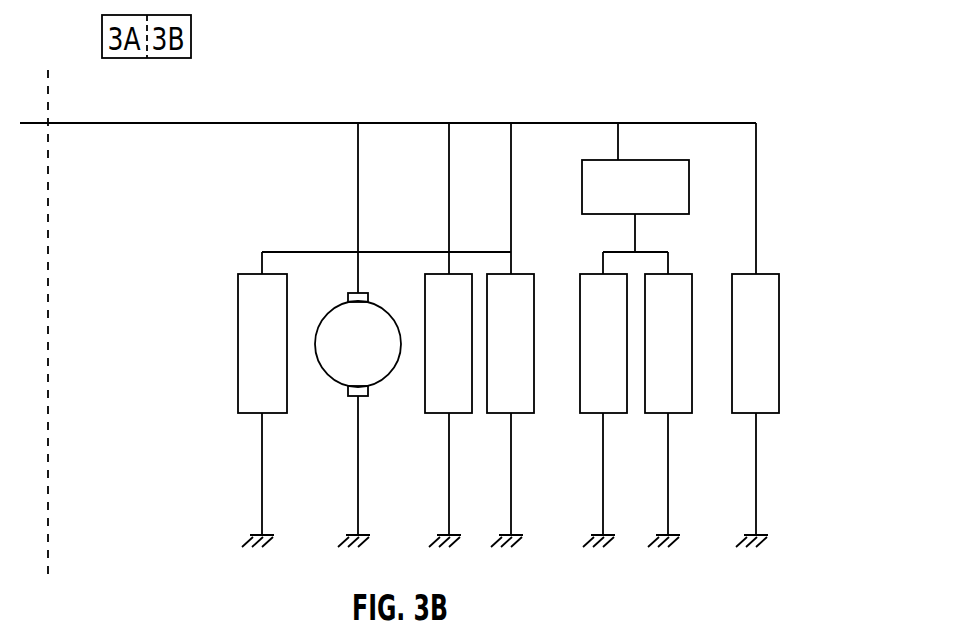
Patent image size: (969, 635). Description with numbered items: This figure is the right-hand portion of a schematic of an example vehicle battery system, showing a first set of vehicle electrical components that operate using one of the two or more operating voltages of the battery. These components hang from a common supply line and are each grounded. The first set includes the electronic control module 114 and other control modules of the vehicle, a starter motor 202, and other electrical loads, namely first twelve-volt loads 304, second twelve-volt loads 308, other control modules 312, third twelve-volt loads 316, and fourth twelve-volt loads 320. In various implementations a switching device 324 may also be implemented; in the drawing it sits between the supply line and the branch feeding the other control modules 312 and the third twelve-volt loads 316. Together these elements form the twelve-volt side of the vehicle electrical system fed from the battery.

The electronic control module 114 is at (238, 303).
The starter motor 202 is at (332, 311).
The first 12 V loads 304 is at (442, 415).
The second 12 V loads 308 is at (515, 273).
The other control modules 312 is at (598, 415).
The third 12 V loads 316 is at (672, 273).
The fourth 12 V loads 320 is at (780, 297).
The switching device 324 is at (643, 160).